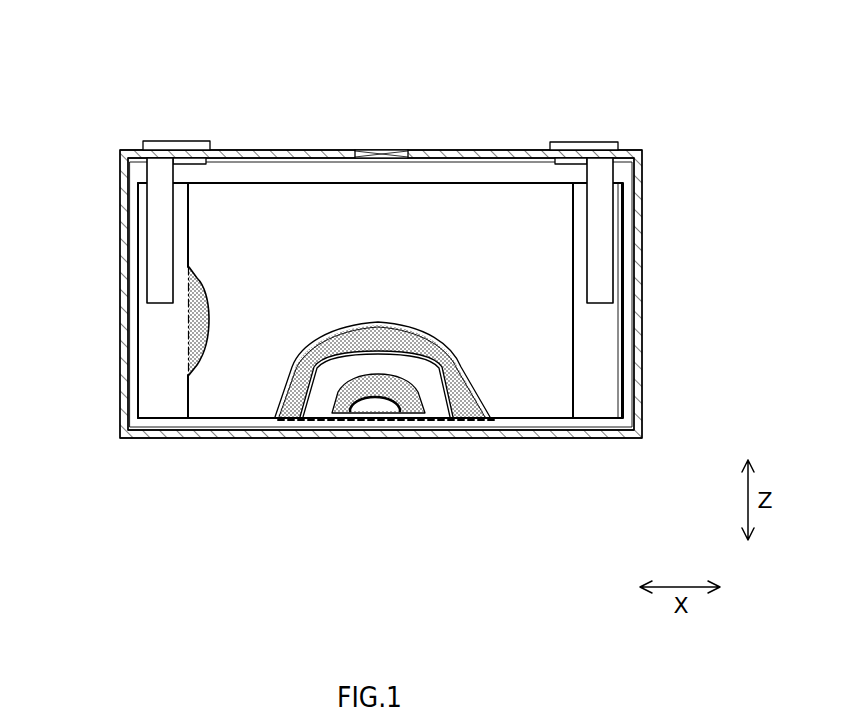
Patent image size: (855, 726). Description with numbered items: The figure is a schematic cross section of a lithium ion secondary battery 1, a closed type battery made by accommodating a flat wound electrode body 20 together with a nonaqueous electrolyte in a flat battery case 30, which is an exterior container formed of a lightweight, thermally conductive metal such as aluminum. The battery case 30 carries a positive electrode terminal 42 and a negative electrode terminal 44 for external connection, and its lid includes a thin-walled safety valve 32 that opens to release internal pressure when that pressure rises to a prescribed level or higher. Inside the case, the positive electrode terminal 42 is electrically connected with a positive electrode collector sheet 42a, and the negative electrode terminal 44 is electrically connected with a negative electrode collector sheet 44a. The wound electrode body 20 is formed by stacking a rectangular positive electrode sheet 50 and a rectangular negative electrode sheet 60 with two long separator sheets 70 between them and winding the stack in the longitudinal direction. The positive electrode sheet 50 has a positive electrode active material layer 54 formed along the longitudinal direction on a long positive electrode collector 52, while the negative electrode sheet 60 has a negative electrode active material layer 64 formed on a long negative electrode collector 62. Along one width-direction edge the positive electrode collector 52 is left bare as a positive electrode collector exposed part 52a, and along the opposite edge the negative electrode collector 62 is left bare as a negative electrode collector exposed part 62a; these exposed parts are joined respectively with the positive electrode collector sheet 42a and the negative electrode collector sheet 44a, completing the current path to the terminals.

The lithium ion secondary battery 1 is at (658, 78).
The wound electrode body 20 is at (303, 181).
The battery case 30 is at (644, 258).
The safety valve 32 is at (390, 150).
The positive electrode terminal 42 is at (188, 141).
The positive electrode collector sheet 42a is at (155, 222).
The negative electrode terminal 44 is at (594, 141).
The negative electrode collector sheet 44a is at (608, 218).
The positive electrode sheet 50 is at (292, 417).
The positive electrode collector 52 is at (132, 327).
The positive electrode collector exposed part 52a is at (147, 368).
The positive electrode active material layer 54 is at (213, 300).
The negative electrode sheet 60 is at (351, 411).
The negative electrode collector 62 is at (628, 329).
The negative electrode collector exposed part 62a is at (608, 365).
The negative electrode active material layer 64 is at (378, 453).
The separator sheets 70 is at (222, 375).